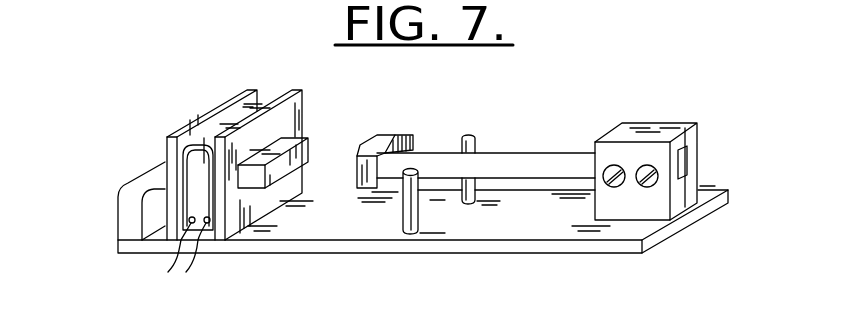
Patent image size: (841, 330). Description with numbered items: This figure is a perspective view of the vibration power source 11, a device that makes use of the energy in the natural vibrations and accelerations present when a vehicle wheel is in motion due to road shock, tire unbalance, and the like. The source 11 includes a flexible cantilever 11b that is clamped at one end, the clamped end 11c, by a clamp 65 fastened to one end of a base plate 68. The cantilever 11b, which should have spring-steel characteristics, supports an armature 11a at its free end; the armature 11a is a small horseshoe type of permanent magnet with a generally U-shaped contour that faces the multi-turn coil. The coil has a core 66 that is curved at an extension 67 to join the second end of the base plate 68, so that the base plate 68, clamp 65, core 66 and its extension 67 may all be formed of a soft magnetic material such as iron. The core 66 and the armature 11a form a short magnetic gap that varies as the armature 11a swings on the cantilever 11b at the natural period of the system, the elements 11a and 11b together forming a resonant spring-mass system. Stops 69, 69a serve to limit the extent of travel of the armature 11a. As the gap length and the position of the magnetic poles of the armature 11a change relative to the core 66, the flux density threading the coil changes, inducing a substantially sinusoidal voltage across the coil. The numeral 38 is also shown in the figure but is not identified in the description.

The vibration power source 11 is at (531, 131).
The armature 11a is at (398, 133).
The flexible cantilever 11b is at (554, 151).
The clamped end 11c is at (652, 123).
The magnet plates 38 is at (262, 100).
The clamp 65 is at (697, 170).
The core 66 is at (313, 148).
The extension 67 is at (118, 202).
The base plate 68 is at (288, 253).
The stop 69 is at (478, 136).
The stop 69a is at (418, 228).